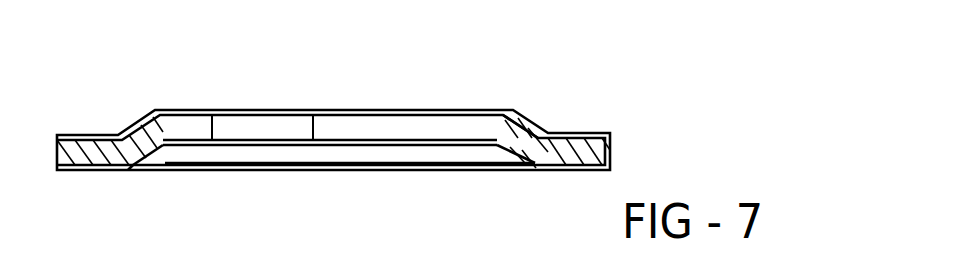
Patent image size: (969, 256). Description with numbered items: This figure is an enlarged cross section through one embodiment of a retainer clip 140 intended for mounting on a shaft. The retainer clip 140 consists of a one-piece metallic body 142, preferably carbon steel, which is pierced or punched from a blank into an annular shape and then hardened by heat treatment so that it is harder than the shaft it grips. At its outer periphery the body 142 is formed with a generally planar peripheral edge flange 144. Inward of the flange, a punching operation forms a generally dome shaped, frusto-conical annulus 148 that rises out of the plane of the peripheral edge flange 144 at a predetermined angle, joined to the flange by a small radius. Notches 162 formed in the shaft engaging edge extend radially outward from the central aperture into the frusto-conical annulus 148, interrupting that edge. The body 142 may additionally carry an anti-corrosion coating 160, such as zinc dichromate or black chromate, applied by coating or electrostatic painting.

The retainer clip 140 is at (294, 37).
The anti-corrosion coating 160 is at (93, 136).
The frusto-conical annulus 148 is at (123, 133).
The notches 162 is at (481, 110).
The body 142 is at (548, 133).
The peripheral edge flange 144 is at (592, 147).